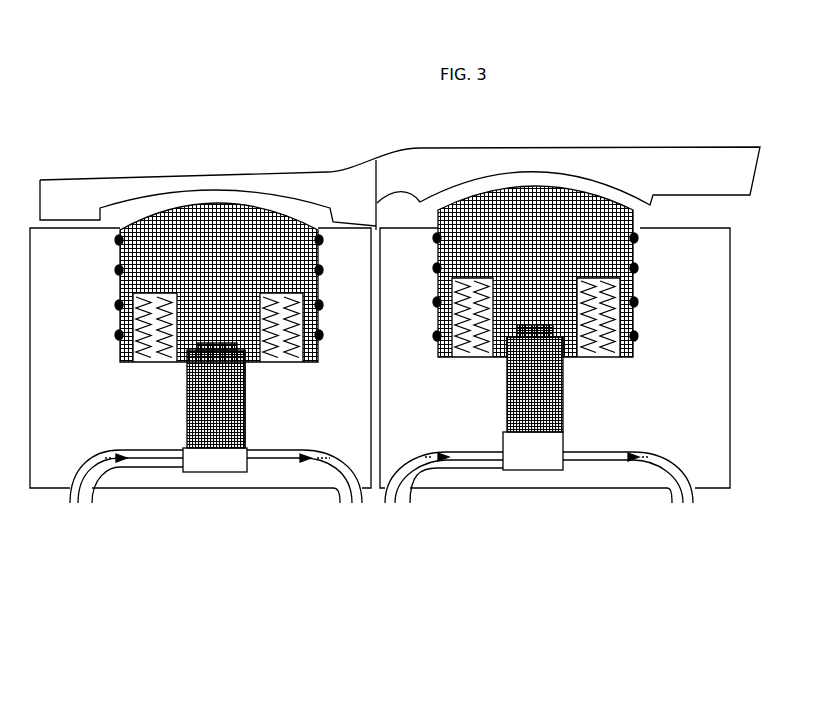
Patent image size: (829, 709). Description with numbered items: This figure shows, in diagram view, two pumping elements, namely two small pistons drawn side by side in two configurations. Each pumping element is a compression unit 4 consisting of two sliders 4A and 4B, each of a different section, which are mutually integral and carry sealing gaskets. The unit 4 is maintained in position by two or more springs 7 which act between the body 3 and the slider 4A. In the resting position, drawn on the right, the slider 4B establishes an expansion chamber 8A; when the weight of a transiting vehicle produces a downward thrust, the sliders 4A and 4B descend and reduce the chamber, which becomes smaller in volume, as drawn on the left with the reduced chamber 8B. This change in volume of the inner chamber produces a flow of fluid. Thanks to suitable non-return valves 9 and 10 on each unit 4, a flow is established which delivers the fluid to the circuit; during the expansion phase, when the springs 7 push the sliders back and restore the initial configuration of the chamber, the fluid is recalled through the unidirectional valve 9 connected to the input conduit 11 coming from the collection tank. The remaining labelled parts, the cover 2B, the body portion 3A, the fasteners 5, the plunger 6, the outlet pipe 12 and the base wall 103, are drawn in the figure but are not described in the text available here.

The cover 2B is at (157, 198).
The body 3 is at (52, 238).
The first body 3A is at (222, 187).
The unit 4 is at (643, 217).
The slider 4A is at (243, 257).
The slider 4B is at (245, 403).
The fasteners 5 is at (118, 278).
The plunger 6 is at (185, 432).
The springs 7 is at (133, 349).
The expansion chamber 8A is at (533, 432).
The reduced chamber 8B is at (213, 448).
The unidirectional valve 9 is at (122, 450).
The non-return valve 10 is at (305, 452).
The input conduit 11 is at (92, 497).
The outlet pipe 12 is at (337, 494).
The base wall 103 is at (200, 493).